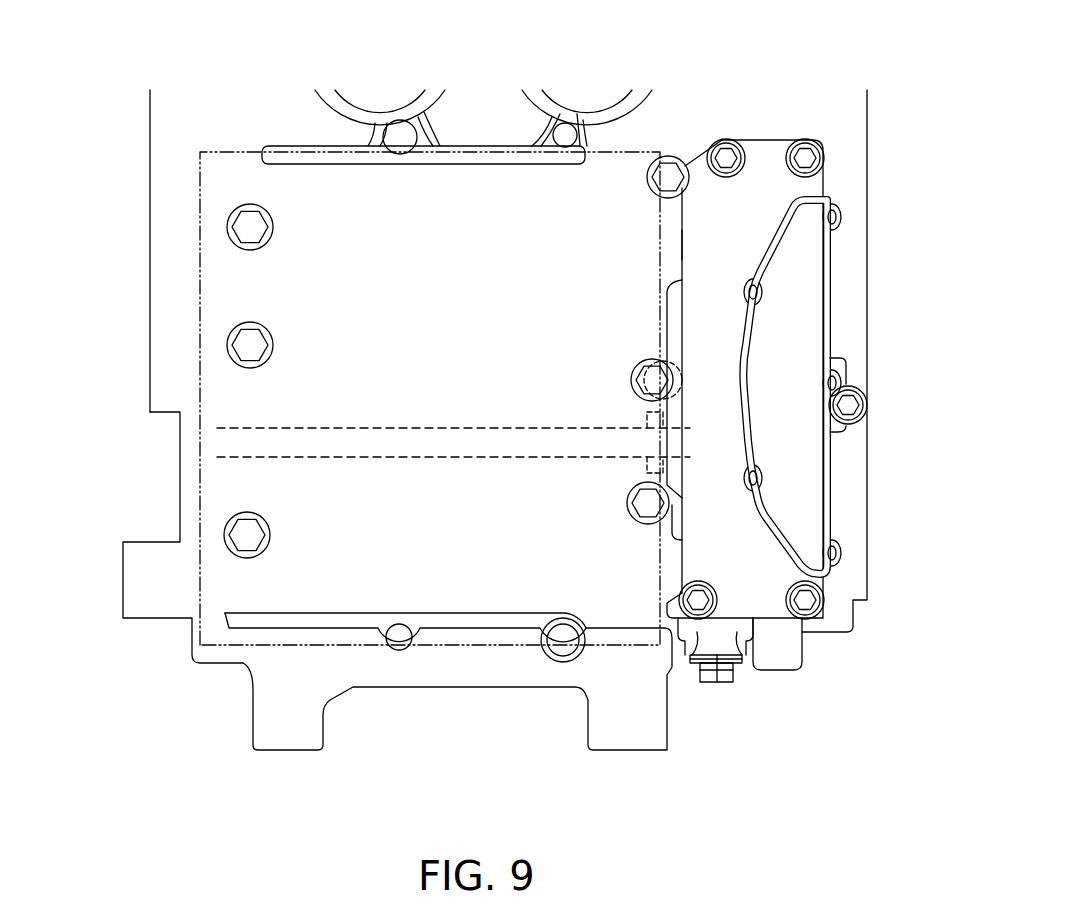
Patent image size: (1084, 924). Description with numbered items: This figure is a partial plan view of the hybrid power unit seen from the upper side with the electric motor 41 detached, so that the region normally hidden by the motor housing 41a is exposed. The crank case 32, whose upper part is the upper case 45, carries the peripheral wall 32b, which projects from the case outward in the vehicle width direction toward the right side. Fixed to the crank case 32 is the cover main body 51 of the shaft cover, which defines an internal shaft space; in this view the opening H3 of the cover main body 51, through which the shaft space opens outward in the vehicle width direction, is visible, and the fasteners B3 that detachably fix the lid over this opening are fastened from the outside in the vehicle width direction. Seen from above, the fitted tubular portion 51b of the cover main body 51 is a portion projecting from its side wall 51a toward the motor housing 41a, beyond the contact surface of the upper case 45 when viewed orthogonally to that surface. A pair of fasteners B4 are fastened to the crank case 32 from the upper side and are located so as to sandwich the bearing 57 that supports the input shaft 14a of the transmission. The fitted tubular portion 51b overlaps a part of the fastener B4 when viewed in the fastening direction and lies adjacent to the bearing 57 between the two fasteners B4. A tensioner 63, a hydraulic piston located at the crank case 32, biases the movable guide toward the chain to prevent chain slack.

The upper case 45 is at (150, 235).
The crank case 32 is at (150, 363).
The peripheral wall 32b is at (867, 140).
The electric motor 41 is at (200, 505).
The motor housing 41a is at (505, 647).
The input shaft 14a is at (400, 457).
The cover main body 51 is at (753, 198).
The side wall 51a is at (682, 243).
The fitted tubular portion 51b is at (665, 307).
The bearing 57 is at (645, 420).
The tensioner 63 is at (742, 660).
The fasteners B3 is at (867, 403).
The fasteners B4 is at (645, 373).
The opening H3 is at (815, 345).